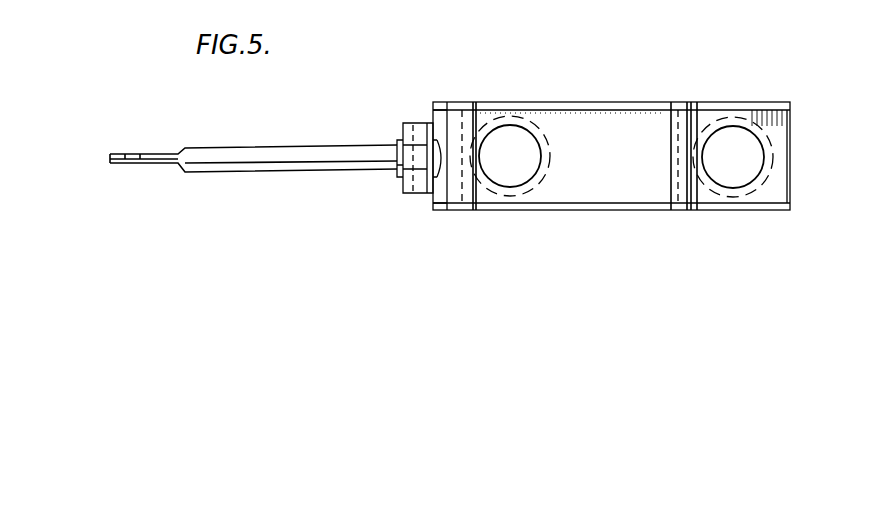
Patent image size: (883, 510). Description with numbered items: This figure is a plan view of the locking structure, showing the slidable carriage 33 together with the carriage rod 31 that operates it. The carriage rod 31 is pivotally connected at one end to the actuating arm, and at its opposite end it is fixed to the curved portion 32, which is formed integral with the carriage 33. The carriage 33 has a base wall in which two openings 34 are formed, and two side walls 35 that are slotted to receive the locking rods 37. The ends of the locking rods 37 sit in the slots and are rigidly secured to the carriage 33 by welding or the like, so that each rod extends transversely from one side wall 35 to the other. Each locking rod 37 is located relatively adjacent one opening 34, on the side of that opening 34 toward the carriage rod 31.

The carriage rod 31 is at (268, 158).
The curved portion 32 is at (407, 192).
The slidable carriage 33 is at (541, 100).
The opening 34 is at (540, 147).
The side wall 35 is at (640, 102).
The locking rod 37 is at (463, 125).